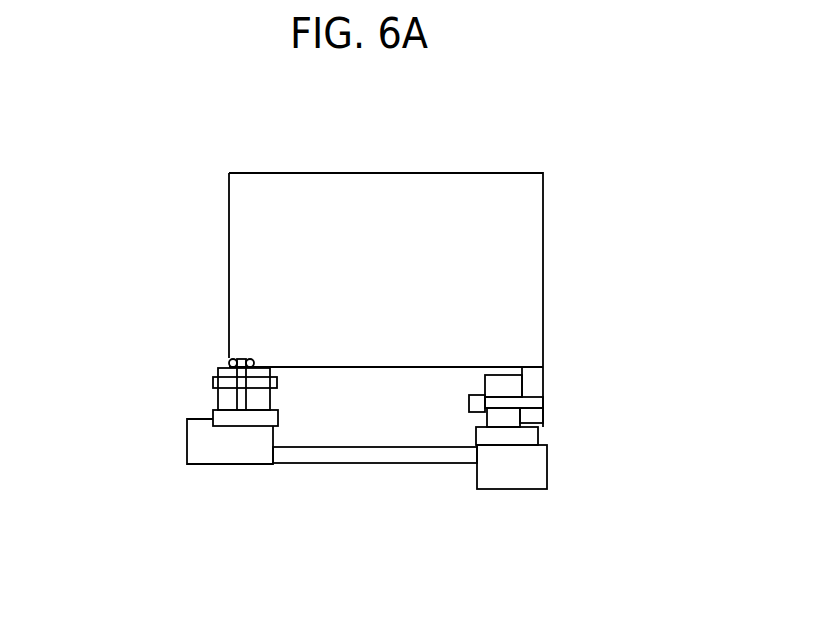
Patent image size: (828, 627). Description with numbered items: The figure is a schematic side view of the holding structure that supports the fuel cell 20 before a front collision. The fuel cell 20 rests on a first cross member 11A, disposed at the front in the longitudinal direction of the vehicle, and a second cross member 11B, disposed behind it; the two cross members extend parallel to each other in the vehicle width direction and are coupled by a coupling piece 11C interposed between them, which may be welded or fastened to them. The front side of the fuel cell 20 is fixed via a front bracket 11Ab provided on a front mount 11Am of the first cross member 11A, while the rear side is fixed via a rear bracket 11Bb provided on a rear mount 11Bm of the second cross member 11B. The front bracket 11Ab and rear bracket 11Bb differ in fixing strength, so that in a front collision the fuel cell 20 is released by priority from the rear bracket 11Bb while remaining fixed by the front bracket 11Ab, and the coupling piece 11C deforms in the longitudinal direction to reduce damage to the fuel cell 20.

The fuel cell 20 is at (523, 221).
The first cross member 11A is at (221, 453).
The front mount 11Am is at (208, 412).
The front bracket 11Ab is at (233, 387).
The coupling piece 11C is at (378, 455).
The second cross member 11B is at (532, 473).
The rear mount 11Bm is at (544, 431).
The rear bracket 11Bb is at (513, 393).